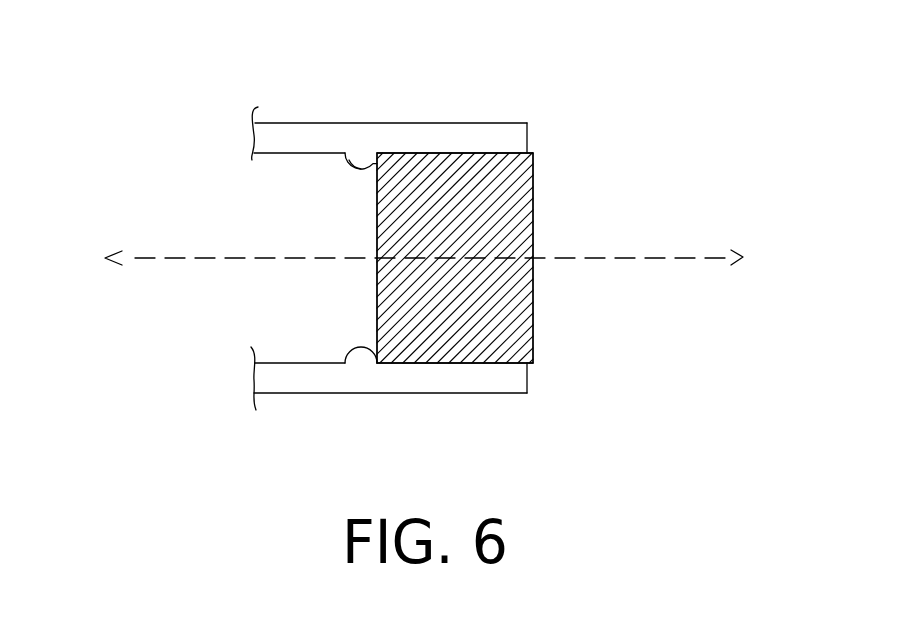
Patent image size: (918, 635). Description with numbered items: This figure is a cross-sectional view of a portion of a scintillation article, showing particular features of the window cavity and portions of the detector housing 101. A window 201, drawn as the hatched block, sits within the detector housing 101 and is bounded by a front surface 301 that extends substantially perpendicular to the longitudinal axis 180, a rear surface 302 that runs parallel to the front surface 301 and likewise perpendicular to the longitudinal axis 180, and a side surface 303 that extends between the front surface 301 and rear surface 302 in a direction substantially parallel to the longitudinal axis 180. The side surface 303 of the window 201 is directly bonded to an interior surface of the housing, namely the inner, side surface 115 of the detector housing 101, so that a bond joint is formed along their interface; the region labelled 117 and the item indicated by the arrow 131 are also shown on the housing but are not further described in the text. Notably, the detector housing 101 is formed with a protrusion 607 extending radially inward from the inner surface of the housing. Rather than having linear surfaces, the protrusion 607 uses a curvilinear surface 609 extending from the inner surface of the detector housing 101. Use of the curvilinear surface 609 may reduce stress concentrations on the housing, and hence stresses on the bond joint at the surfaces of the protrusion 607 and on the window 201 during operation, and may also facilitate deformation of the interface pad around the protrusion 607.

The detector housing 101 is at (293, 138).
The inner, side surface 115 is at (422, 363).
The top surface 117 is at (527, 138).
The electrode 131 is at (535, 390).
The longitudinal axis 180 is at (675, 257).
The window 201 is at (510, 250).
The front surface 301 is at (533, 310).
The rear surface 302 is at (377, 243).
The side surface 303 is at (467, 153).
The protrusion 607 is at (361, 163).
The curvilinear surface 609 is at (356, 170).